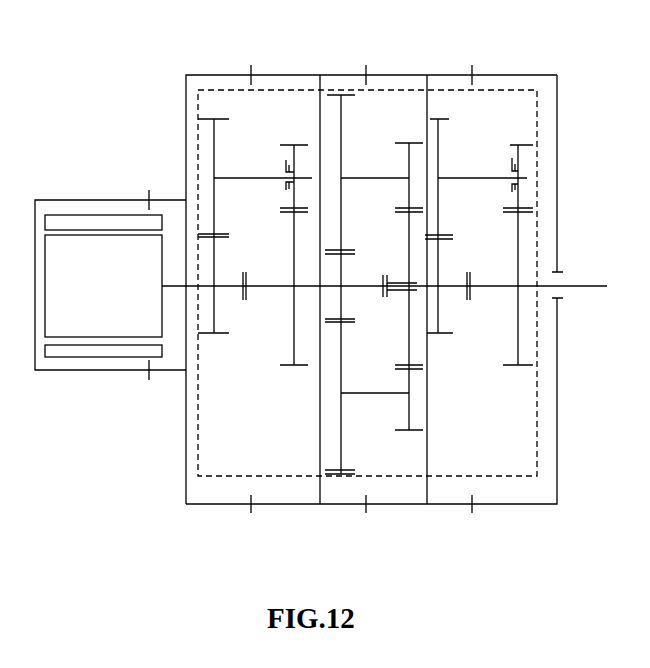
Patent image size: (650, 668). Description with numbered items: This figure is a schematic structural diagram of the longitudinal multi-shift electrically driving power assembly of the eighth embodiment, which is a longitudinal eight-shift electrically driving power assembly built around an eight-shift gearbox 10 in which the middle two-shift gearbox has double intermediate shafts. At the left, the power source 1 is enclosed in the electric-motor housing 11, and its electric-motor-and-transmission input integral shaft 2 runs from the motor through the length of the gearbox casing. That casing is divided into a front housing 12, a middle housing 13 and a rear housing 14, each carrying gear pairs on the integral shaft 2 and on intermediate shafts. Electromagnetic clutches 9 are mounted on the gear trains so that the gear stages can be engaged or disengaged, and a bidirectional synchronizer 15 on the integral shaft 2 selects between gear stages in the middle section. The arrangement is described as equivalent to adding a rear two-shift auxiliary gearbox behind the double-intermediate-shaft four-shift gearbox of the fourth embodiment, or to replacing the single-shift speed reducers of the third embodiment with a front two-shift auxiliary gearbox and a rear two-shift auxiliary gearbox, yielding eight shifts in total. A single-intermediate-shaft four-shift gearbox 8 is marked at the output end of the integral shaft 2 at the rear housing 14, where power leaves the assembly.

The power source 1 is at (118, 272).
The electric-motor-and-transmission input integral shaft 2 is at (193, 286).
The single-intermediate-shaft four-shift gearbox 8 is at (558, 285).
The electromagnetic clutches 9 is at (285, 178).
The eight-shift gearbox 10 is at (308, 89).
The electric-motor housing 11 is at (97, 371).
The front housing 12 is at (186, 400).
The middle housing 13 is at (309, 504).
The rear housing 14 is at (507, 504).
The bidirectional synchronizer 15 is at (383, 290).